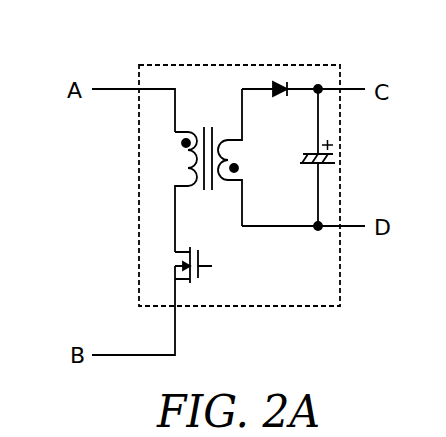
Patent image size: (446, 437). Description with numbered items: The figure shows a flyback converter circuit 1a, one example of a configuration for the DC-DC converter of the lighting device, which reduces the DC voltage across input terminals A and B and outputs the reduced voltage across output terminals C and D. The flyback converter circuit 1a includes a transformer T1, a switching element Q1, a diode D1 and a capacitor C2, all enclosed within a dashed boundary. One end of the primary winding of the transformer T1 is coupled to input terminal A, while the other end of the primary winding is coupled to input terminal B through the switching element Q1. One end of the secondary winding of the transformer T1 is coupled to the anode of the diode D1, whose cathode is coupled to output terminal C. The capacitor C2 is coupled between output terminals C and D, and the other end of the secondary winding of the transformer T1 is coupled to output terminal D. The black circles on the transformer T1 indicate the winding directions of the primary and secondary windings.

The flyback converter circuit 1a is at (228, 184).
The transformer T1 is at (208, 170).
The switching element Q1 is at (204, 274).
The diode D1 is at (280, 104).
The capacitor C2 is at (298, 157).